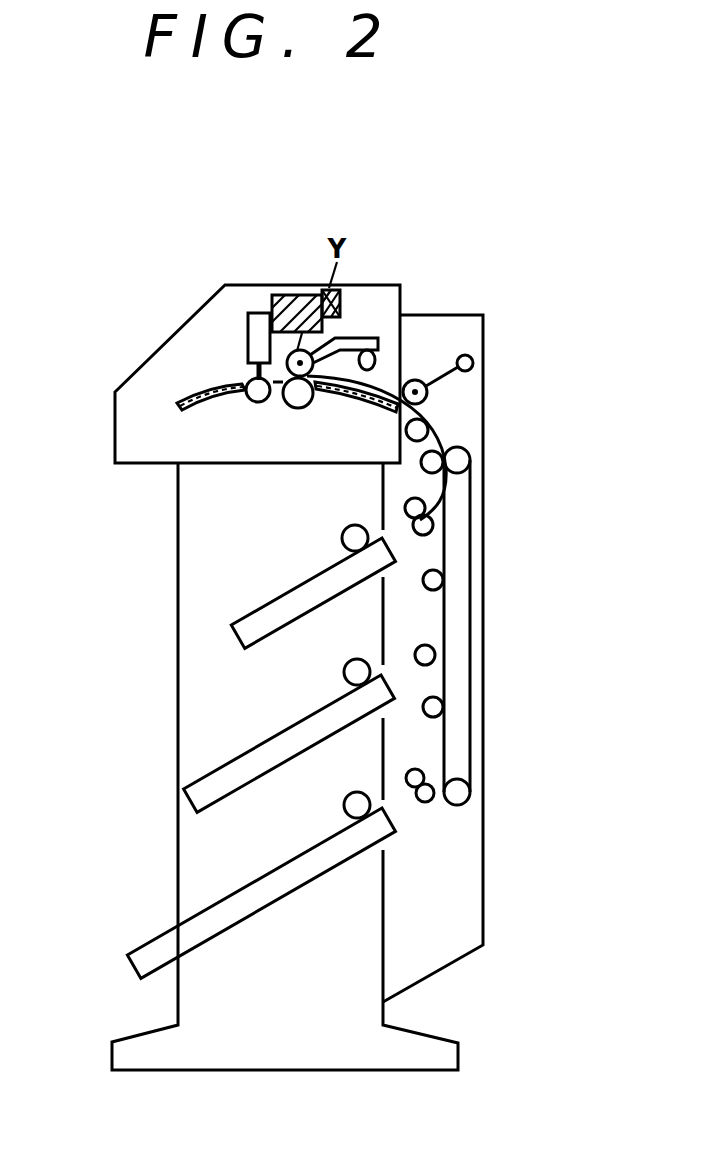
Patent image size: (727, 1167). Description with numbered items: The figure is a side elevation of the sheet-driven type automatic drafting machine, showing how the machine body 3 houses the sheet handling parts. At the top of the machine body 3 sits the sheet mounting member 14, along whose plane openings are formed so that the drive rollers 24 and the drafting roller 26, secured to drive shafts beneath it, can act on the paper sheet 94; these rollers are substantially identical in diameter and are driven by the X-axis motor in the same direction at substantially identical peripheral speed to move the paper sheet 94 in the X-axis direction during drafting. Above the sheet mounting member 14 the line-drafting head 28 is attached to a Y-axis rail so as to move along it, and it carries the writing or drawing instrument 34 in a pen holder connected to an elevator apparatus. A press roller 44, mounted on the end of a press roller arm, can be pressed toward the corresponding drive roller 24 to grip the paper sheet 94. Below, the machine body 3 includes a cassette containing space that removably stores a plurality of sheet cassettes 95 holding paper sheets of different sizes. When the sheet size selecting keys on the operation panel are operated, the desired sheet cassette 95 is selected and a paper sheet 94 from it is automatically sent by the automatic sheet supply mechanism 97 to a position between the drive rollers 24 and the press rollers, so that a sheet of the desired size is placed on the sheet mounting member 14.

The machine body 3 is at (178, 683).
The sheet mounting member 14 is at (182, 398).
The drive rollers 24 is at (298, 400).
The drafting roller 26 is at (248, 380).
The line-drafting head 28 is at (293, 305).
The writing or drawing instrument 34 is at (250, 330).
The press roller 44 is at (344, 300).
The paper sheet 94 is at (437, 433).
The sheet cassettes 95 is at (240, 620).
The automatic sheet supply mechanism 97 is at (473, 622).